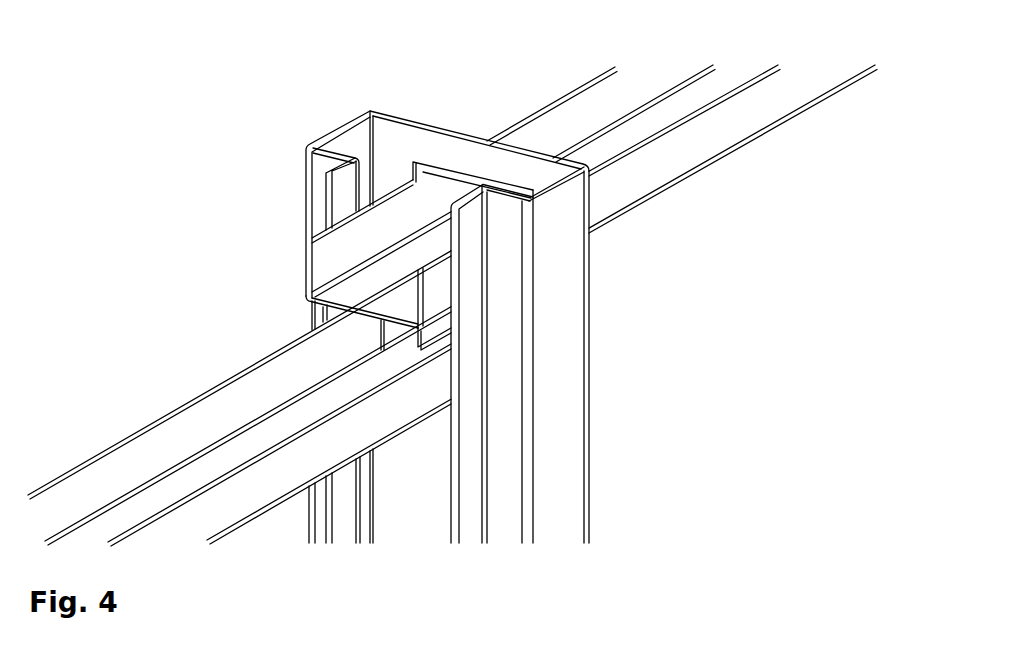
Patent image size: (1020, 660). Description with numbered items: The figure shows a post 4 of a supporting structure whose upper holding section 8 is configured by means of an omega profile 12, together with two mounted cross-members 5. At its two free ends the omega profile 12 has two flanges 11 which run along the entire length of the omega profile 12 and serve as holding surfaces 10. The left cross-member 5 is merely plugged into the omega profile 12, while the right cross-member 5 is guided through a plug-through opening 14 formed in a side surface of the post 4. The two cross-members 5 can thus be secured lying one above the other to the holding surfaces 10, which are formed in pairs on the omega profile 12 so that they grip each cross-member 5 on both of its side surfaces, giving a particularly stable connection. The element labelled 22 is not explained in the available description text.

The post 4 is at (582, 355).
The cross-member 5 is at (452, 305).
The upper holding section 8 is at (572, 358).
The holding surface 10 is at (345, 207).
The flange 11 is at (465, 238).
The omega profile 12 is at (426, 286).
The plug-through opening 14 is at (426, 166).
The rail panel 22 is at (238, 395).